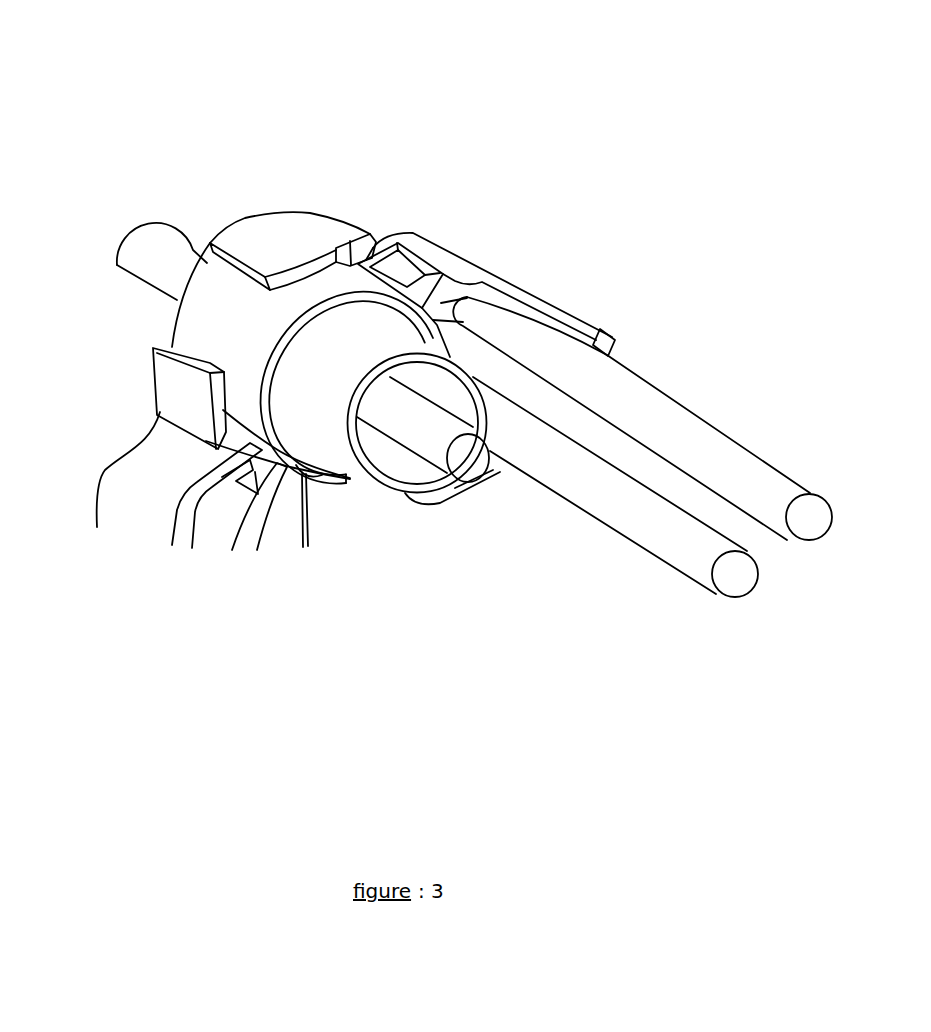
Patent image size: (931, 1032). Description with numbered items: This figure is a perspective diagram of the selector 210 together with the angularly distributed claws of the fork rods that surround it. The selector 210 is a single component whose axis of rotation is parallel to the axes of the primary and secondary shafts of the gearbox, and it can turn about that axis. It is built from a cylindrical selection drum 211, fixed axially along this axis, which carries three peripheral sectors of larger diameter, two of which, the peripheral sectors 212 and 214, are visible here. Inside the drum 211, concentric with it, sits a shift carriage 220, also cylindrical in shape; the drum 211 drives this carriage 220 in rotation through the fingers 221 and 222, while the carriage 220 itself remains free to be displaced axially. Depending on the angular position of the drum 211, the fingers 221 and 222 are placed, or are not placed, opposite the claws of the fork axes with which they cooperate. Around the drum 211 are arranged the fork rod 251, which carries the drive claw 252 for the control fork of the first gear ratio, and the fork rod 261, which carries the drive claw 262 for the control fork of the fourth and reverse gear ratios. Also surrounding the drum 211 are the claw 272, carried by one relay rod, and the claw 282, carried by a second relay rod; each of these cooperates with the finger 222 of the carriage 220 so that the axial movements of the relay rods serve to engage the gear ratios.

The selector 210 is at (428, 346).
The cylindrical selection drum 211 is at (210, 293).
The peripheral sector 212 is at (267, 230).
The peripheral sector 214 is at (180, 390).
The shift carriage 220 is at (373, 477).
The finger 221 is at (407, 273).
The finger 222 is at (305, 478).
The rod 251 is at (728, 467).
The drive claw 252 is at (458, 263).
The rod 261 is at (665, 530).
The drive claw 262 is at (452, 490).
The claw 272 is at (162, 492).
The claw 282 is at (238, 517).